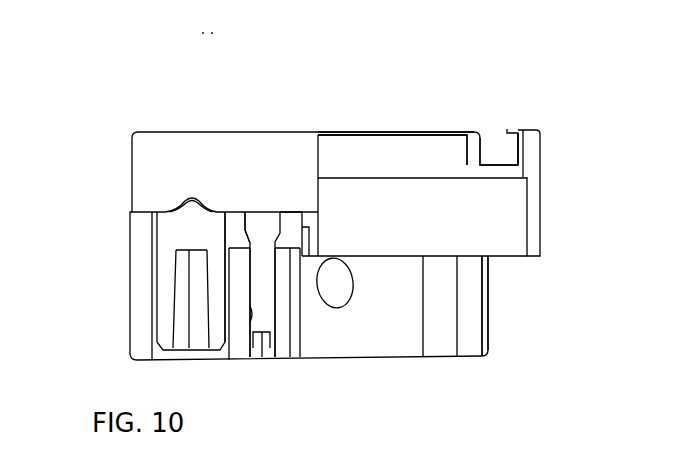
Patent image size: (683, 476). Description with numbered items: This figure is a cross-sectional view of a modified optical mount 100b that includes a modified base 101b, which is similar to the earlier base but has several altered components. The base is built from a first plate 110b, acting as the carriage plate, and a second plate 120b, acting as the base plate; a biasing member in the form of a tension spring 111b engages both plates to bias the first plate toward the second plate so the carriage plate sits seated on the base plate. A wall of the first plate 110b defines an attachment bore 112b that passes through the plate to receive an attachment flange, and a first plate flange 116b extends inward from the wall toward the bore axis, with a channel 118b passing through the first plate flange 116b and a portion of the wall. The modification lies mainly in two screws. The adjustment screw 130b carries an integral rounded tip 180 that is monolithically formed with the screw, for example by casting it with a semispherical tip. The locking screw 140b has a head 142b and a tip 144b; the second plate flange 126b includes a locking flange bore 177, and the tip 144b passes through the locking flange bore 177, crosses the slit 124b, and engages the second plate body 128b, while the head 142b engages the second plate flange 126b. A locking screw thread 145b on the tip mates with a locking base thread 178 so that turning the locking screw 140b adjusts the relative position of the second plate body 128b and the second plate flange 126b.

The optical mount 100b is at (536, 466).
The modified base 101b is at (522, 66).
The first plate 110b is at (148, 160).
The tension spring 111b is at (240, 245).
The attachment bore 112b is at (497, 258).
The first plate flange 116b is at (384, 130).
The channel 118b is at (488, 112).
The second plate 120b is at (142, 278).
The slit 124b is at (329, 298).
The second plate flange 126b is at (290, 229).
The second plate body 128b is at (473, 322).
The adjustment screw 130b is at (163, 302).
The locking screw 140b is at (277, 318).
The head 142b is at (259, 212).
The tip 144b is at (268, 318).
The locking screw thread 145b is at (248, 330).
The locking flange bore 177 is at (277, 214).
The locking base thread 178 is at (248, 306).
The rounded tip 180 is at (182, 206).